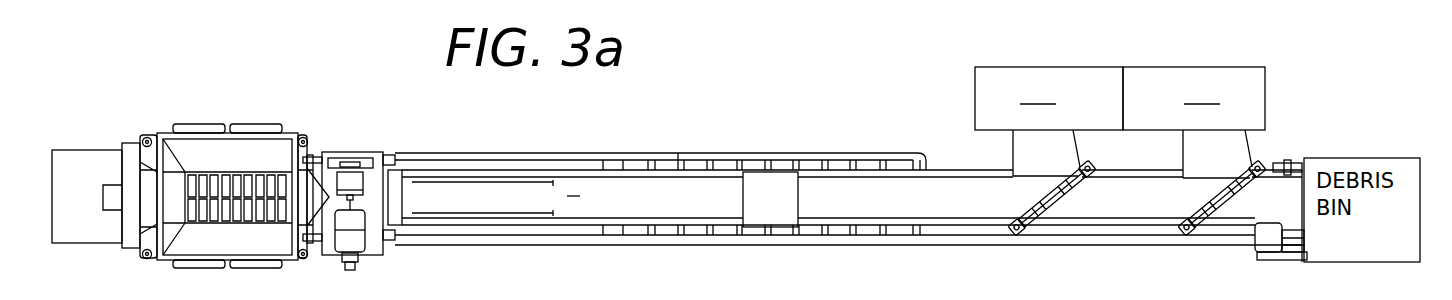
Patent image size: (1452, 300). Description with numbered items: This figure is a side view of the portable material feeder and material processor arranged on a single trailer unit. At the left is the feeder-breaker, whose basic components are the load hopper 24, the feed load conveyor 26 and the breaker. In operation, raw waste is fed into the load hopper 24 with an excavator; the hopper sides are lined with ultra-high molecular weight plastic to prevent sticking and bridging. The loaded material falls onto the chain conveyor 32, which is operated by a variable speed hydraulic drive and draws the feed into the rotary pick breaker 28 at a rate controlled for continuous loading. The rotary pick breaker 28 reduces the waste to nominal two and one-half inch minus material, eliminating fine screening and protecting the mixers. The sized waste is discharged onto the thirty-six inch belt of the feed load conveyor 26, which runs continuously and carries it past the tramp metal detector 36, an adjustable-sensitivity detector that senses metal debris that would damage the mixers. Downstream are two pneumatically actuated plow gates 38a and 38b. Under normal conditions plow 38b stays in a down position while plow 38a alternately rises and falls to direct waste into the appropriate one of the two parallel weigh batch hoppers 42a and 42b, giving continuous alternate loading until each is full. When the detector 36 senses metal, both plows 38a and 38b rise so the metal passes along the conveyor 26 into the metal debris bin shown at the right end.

The load hopper 24 is at (254, 152).
The feed load conveyor 26 is at (568, 195).
The rotary pick breaker 28 is at (372, 202).
The chain conveyor 32 is at (398, 195).
The tramp metal detector 36 is at (758, 175).
The plow gate 38a is at (1053, 207).
The plow gate 38b is at (1222, 208).
The weigh batch hopper 42a is at (1049, 121).
The weigh batch hopper 42b is at (1194, 122).